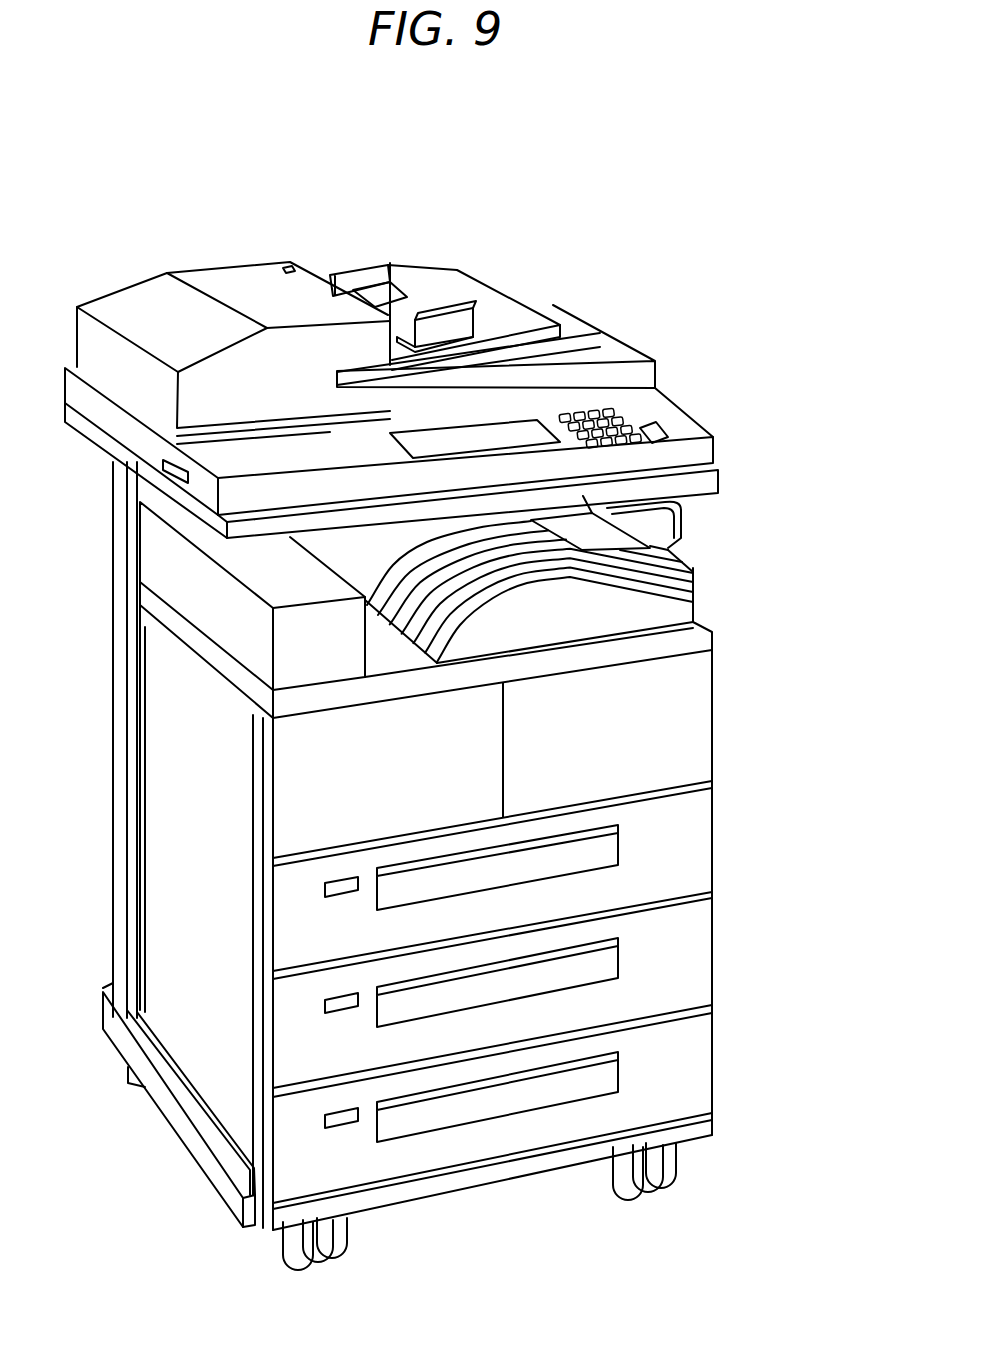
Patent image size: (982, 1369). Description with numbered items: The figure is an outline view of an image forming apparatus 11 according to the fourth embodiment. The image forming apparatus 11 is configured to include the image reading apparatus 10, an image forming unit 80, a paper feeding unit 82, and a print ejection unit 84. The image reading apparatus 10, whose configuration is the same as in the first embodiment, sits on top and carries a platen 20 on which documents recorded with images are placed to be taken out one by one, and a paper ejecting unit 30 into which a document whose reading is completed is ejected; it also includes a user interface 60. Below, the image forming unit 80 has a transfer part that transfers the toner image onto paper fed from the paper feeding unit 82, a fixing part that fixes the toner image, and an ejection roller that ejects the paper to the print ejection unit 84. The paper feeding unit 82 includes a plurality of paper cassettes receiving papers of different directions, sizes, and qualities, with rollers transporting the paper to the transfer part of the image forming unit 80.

The image reading apparatus 10 is at (240, 242).
The image forming apparatus 11 is at (386, 161).
The platen 20 is at (470, 292).
The paper ejecting unit 30 is at (605, 347).
The user interface (UI) 60 is at (672, 412).
The image forming unit 80 is at (730, 722).
The paper feeding unit 82 is at (712, 1058).
The print ejection unit 84 is at (628, 568).